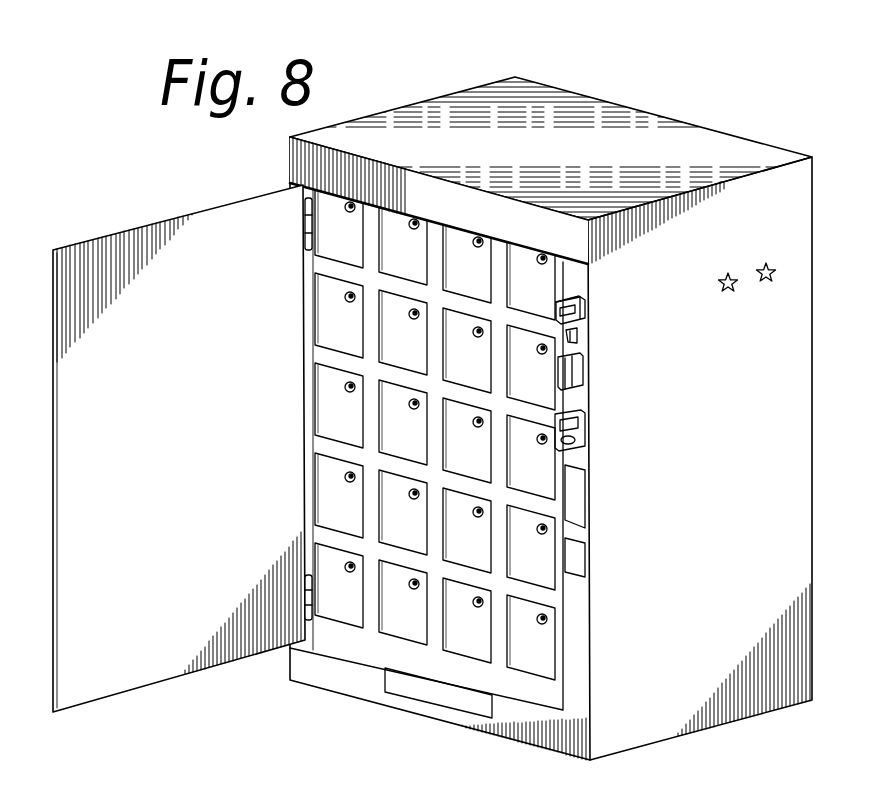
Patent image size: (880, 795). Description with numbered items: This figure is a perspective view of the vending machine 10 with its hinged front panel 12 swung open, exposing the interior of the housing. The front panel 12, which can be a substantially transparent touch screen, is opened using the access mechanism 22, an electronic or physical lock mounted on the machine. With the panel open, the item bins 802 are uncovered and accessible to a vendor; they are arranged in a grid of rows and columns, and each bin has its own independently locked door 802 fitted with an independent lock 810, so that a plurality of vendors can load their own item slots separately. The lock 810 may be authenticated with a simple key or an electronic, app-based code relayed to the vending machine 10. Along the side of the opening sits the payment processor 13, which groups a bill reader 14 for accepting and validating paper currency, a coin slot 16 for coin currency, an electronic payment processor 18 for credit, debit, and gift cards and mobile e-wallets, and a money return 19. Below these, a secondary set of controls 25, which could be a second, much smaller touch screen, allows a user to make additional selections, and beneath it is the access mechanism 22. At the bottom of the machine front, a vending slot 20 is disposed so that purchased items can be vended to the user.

The vending machine 10 is at (642, 150).
The front panel 12 is at (195, 258).
The payment processor 13 is at (631, 321).
The bill reader 14 is at (561, 305).
The coin slot 16 is at (576, 334).
The electronic payment processor 18 is at (605, 369).
The money return 19 is at (576, 438).
The vending slot 20 is at (422, 686).
The access mechanism 22 is at (573, 556).
The secondary set of controls 25 is at (576, 500).
The item bin 802 is at (435, 431).
The lock 810 is at (542, 255).